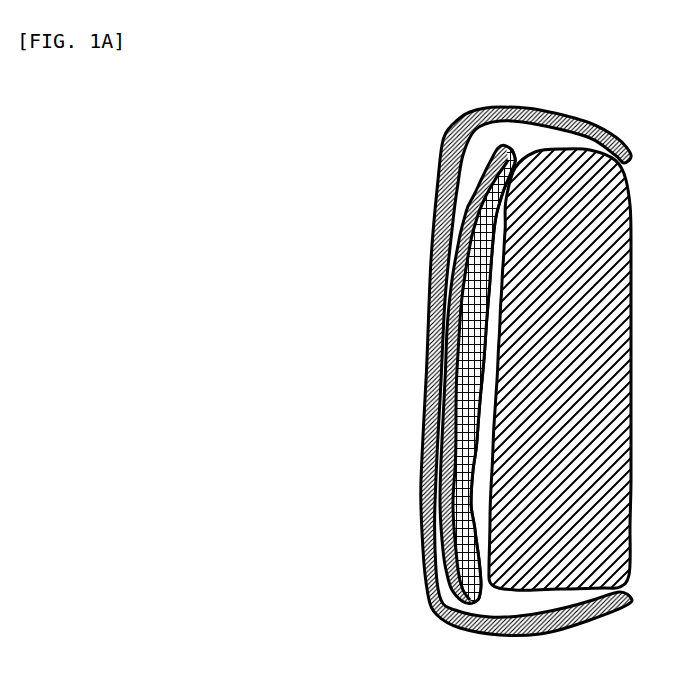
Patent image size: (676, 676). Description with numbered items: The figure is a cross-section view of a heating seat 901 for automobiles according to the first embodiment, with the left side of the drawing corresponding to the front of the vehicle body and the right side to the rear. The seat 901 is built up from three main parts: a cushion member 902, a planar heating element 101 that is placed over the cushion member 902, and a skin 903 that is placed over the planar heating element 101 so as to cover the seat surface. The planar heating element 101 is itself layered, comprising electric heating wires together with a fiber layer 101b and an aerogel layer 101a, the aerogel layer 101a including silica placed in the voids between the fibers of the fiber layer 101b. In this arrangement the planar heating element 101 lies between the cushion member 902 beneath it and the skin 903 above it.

The heating seat 901 is at (292, 95).
The cushion member 902 is at (547, 229).
The skin 903 is at (421, 421).
The planar heating element 101 is at (366, 374).
The aerogel layer 101a is at (458, 315).
The fiber layer 101b is at (447, 333).